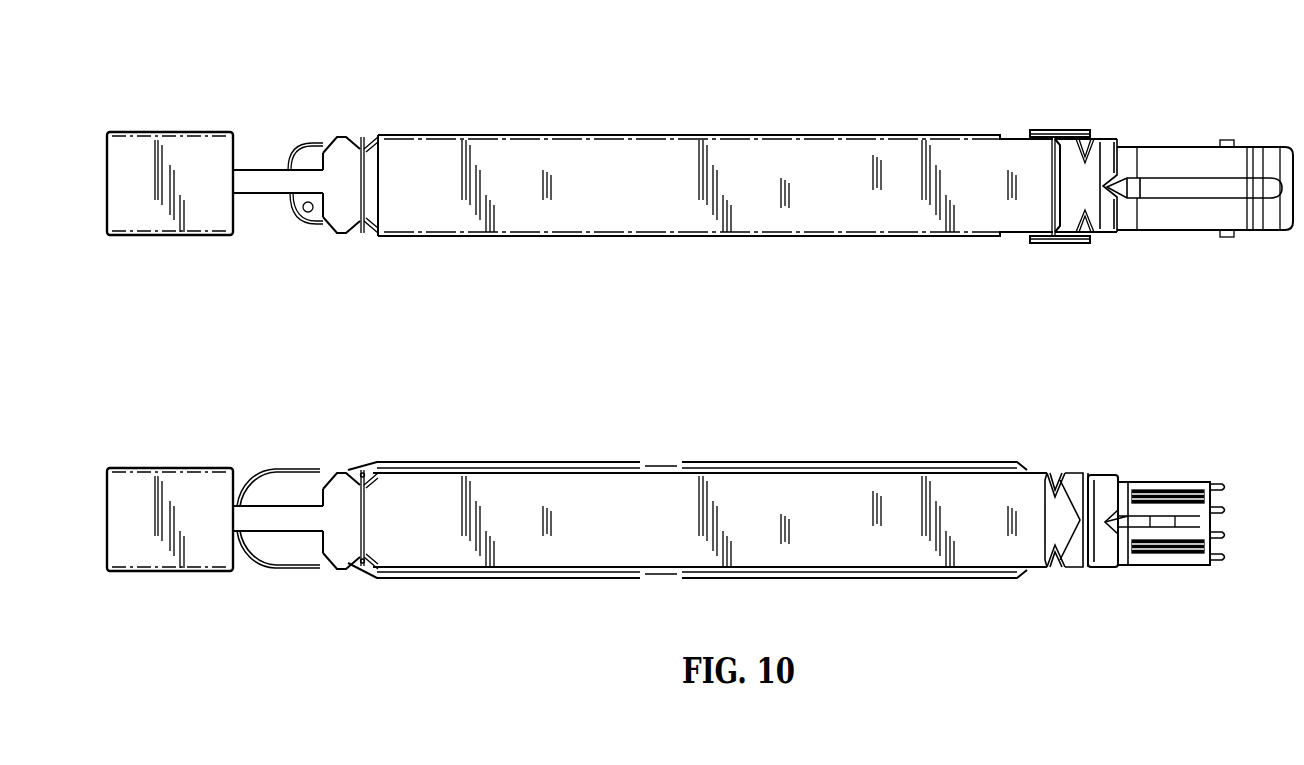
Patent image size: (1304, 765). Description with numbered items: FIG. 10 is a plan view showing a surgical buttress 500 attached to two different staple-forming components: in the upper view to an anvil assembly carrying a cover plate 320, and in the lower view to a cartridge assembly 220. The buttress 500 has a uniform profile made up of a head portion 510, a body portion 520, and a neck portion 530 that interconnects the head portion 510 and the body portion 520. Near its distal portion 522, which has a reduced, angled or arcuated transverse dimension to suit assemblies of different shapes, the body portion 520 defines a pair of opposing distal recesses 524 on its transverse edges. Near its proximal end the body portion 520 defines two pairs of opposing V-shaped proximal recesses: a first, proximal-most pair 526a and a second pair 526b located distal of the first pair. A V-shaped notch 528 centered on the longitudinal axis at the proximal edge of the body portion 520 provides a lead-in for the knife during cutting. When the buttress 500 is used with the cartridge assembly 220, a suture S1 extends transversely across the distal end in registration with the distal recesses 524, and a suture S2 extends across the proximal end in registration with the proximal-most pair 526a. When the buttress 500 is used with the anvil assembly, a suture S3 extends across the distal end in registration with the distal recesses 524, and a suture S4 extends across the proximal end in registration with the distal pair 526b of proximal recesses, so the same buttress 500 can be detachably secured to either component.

The head portion 510 is at (209, 130).
The neck portion 530 is at (283, 162).
The distal portion 522 is at (321, 224).
The distal recesses 524 is at (378, 138).
The suture S3 is at (362, 137).
The suture S1 is at (362, 472).
The suture S2 is at (1055, 492).
The suture S4 is at (1053, 180).
The body portion 520 is at (708, 134).
The surgical buttress 500 is at (706, 176).
The cover plate 320 is at (1034, 128).
The second proximal pair of recesses 526b is at (1058, 140).
The first proximal pair of recesses 526a is at (1090, 138).
The notch 528 is at (1145, 178).
The cartridge assembly 220 is at (1022, 582).